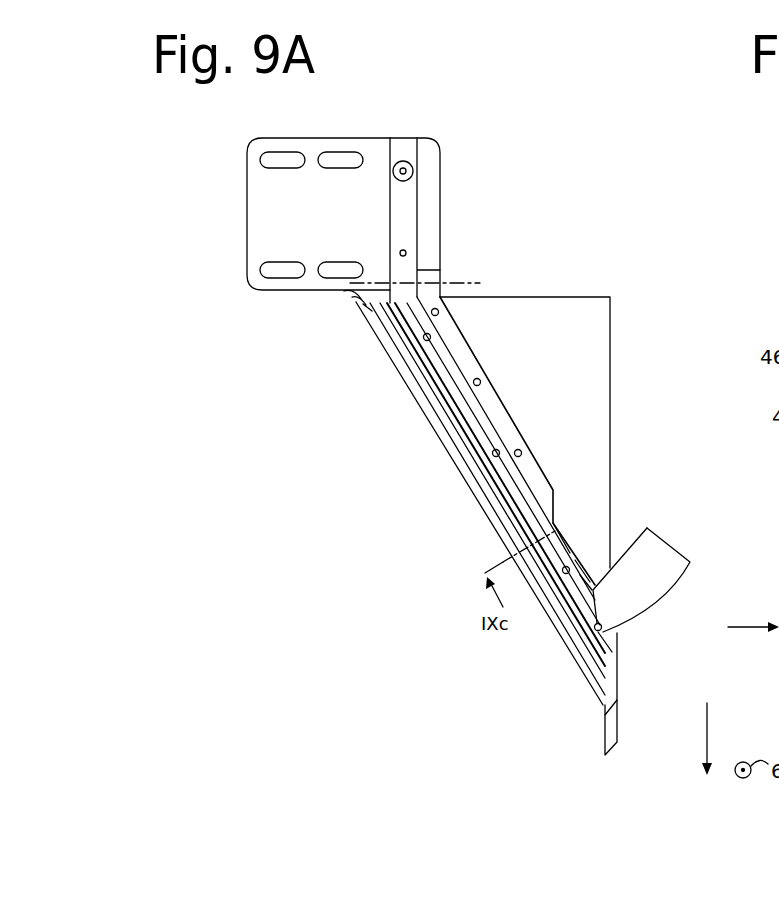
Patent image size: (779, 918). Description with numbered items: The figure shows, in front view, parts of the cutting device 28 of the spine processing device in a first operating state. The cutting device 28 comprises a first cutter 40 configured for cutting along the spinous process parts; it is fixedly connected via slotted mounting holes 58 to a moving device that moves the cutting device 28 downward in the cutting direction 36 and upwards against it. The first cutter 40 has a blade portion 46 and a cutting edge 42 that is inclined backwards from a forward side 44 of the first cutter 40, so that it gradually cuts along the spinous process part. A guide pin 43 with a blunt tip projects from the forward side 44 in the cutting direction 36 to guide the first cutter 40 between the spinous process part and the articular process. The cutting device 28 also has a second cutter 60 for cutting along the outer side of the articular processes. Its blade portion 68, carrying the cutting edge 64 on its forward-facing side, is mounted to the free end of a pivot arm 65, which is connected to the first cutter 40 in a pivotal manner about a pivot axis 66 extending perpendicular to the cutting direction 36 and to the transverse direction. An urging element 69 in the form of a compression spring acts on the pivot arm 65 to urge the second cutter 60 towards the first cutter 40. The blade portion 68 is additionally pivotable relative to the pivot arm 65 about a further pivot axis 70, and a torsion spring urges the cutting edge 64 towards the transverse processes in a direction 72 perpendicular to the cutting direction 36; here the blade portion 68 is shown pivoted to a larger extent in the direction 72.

The cutting device 28 is at (353, 381).
The slotted mounting holes 58 is at (350, 162).
The urging element 69 is at (414, 174).
The pivot axis 66 is at (463, 283).
The blade portion 46 is at (555, 320).
The first cutter 40 is at (563, 642).
The cutting edge 42 is at (585, 686).
The pivot arm 65 is at (550, 549).
The blade portion 68 is at (648, 560).
The further pivot axis 70 is at (609, 615).
The second cutter 60 is at (700, 576).
The cutting edge 64 is at (660, 621).
The direction 72 is at (748, 627).
The cutting direction 36 is at (707, 727).
The guide pin 43 is at (613, 736).
The forward side 44 is at (592, 749).